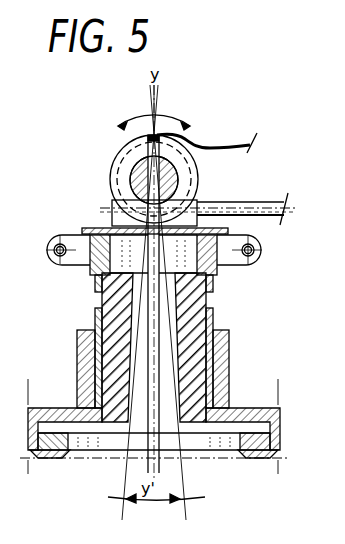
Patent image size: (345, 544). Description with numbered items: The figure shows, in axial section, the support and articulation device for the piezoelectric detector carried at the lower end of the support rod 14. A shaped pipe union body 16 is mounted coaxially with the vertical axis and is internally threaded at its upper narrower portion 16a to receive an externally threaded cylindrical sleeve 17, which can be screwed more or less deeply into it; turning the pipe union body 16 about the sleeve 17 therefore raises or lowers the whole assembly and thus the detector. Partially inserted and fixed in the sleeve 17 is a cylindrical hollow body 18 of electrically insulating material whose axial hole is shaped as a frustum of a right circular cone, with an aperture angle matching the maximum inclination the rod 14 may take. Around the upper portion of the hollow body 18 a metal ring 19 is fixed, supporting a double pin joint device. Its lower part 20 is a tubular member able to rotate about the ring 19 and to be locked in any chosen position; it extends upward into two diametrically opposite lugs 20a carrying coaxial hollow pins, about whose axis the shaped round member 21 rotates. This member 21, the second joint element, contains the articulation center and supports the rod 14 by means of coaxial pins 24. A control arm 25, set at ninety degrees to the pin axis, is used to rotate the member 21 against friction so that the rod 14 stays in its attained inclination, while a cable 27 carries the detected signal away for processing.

The support rod 14 is at (161, 441).
The pipe union body 16 is at (250, 414).
The upper narrower portion 16a is at (86, 352).
The cylindrical sleeve 17 is at (212, 334).
The hollow body 18 is at (198, 302).
The metal ring 19 is at (93, 290).
The lower part of joint device 20 is at (78, 262).
The lugs 20a is at (117, 227).
The shaped round member 21 is at (170, 178).
The coaxial pins 24 is at (135, 177).
The control arm 25 is at (238, 205).
The cable 27 is at (222, 146).